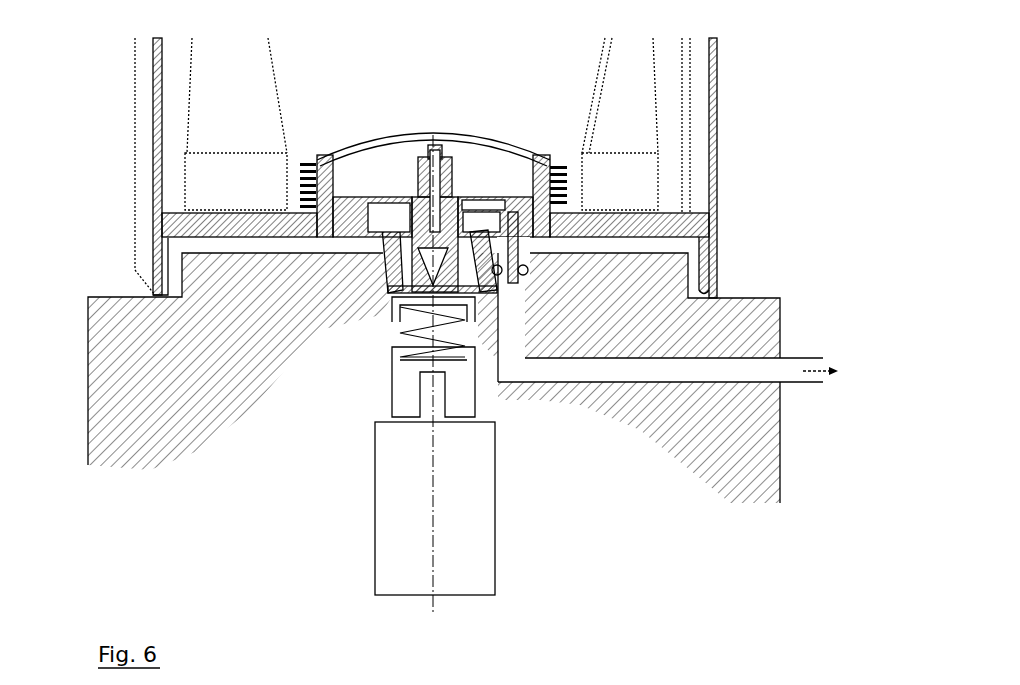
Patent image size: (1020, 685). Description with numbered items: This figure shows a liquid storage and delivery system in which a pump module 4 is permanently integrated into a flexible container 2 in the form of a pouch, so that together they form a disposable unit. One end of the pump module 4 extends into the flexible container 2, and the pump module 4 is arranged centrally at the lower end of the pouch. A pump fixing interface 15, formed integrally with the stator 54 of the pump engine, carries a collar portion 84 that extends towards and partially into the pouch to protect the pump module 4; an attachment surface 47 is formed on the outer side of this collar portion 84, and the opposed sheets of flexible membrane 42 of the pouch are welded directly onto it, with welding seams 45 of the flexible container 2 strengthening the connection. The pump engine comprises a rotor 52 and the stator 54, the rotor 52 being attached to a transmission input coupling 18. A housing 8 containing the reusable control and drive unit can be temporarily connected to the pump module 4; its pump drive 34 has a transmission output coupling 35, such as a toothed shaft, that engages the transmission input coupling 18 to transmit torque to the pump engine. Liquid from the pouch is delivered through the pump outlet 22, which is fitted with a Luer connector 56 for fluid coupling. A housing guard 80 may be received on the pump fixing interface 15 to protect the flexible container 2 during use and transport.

The flexible container 2 is at (680, 120).
The pump module 4 is at (488, 177).
The housing 8 is at (642, 445).
The pump fixing interface 15 is at (195, 233).
The transmission input coupling 18 is at (470, 293).
The pump outlet 22 is at (800, 340).
The pump drive 34 is at (397, 520).
The transmission output coupling 35 is at (443, 297).
The flexible membrane 42 is at (207, 105).
The welding seams 45 is at (638, 183).
The attachment surface 47 is at (560, 165).
The rotor 52 is at (427, 203).
The stator 54 is at (377, 226).
The Luer connector 56 is at (522, 252).
The housing guard 80 is at (147, 55).
The collar portion 84 is at (420, 133).